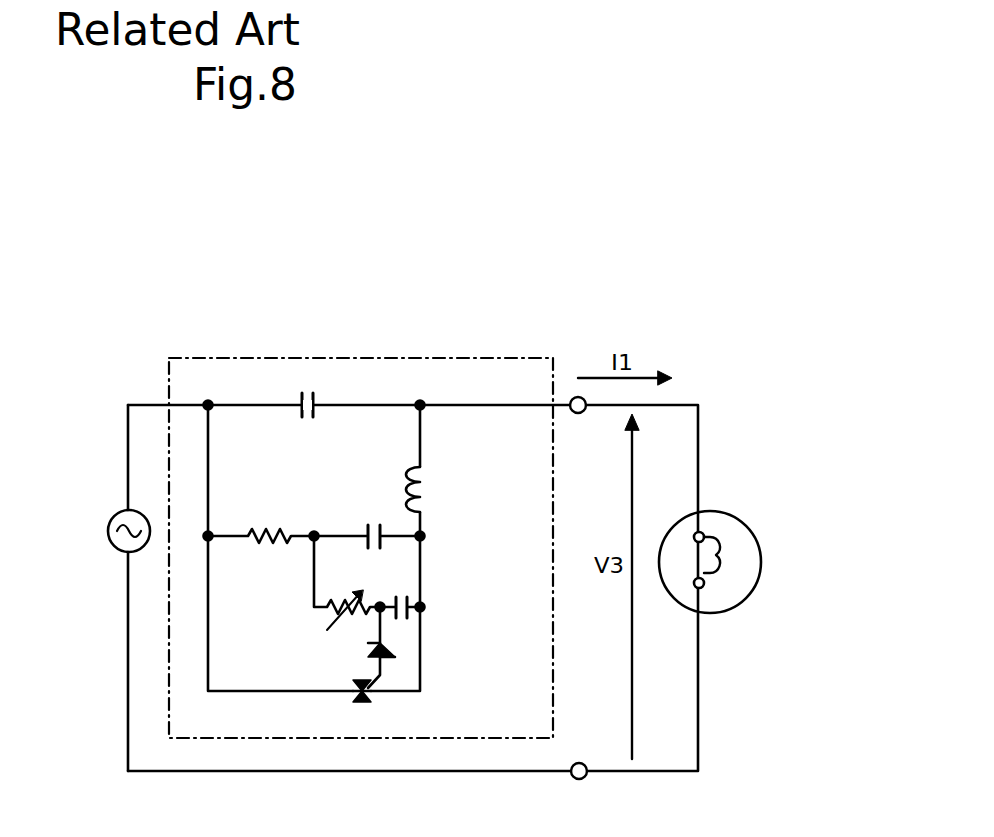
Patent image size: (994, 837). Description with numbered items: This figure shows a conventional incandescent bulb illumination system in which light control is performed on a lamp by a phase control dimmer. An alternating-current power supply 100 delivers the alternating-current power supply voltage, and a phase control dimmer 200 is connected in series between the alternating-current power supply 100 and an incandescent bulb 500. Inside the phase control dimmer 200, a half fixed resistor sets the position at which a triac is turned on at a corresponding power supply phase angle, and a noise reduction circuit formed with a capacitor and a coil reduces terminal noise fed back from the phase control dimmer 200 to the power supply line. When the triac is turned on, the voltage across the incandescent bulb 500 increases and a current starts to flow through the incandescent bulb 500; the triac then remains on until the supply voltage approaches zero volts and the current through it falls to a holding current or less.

The alternating-current power supply 100 is at (108, 531).
The phase control dimmer 200 is at (509, 357).
The incandescent bulb 500 is at (744, 521).